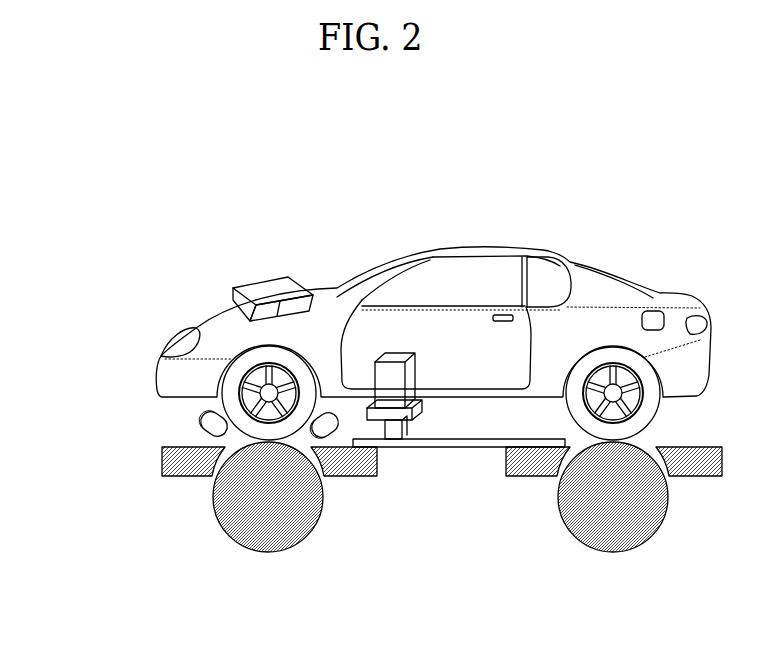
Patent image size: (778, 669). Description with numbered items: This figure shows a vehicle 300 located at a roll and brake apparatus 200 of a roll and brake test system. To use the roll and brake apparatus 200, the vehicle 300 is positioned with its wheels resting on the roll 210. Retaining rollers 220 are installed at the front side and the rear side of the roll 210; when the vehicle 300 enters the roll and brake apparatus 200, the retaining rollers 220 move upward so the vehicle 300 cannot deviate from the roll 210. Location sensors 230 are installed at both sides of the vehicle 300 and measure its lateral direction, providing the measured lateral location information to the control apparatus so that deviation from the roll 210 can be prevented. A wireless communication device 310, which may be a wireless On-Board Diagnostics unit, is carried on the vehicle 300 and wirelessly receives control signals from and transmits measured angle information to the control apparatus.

The roll and brake apparatus 200 is at (123, 444).
The roll 210 is at (268, 537).
The retaining roller 220 is at (215, 432).
The location sensor 230 is at (410, 373).
The vehicle 300 is at (118, 341).
The wireless communication device 310 is at (260, 291).